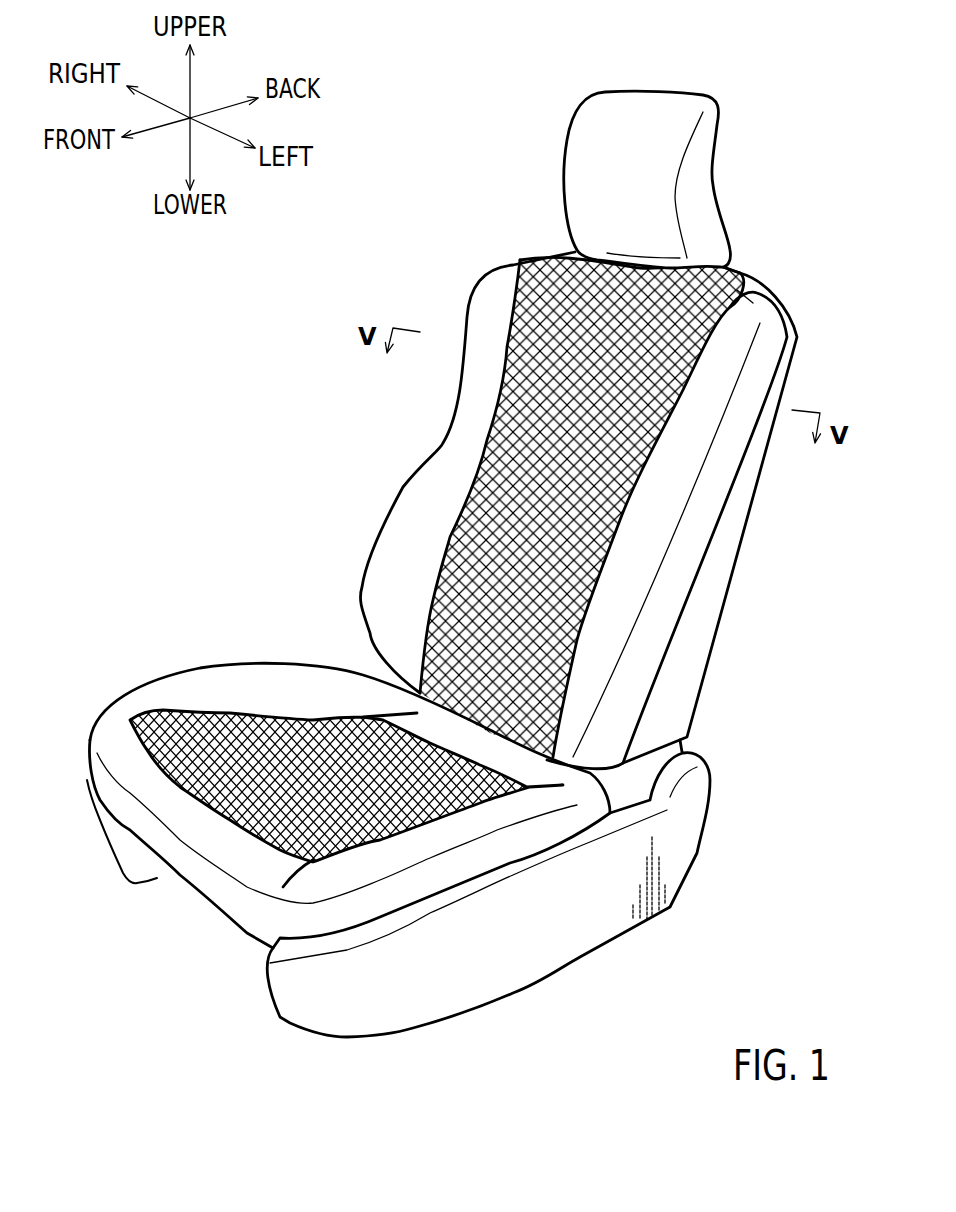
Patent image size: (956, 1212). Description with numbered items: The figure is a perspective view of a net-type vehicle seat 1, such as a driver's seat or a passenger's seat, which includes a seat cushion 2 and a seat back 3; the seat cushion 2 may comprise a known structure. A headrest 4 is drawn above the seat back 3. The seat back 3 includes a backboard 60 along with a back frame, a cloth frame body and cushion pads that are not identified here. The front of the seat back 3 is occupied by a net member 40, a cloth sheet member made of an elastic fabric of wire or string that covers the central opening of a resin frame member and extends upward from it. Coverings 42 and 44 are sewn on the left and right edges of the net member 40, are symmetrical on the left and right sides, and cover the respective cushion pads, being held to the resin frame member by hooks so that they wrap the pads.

The vehicle seat 1 is at (447, 532).
The seat cushion 2 is at (224, 647).
The seat back 3 is at (561, 500).
The headrest 4 is at (645, 122).
The net member 40 is at (683, 297).
The covering 42 is at (673, 537).
The covering 44 is at (457, 443).
The backboard 60 is at (693, 625).